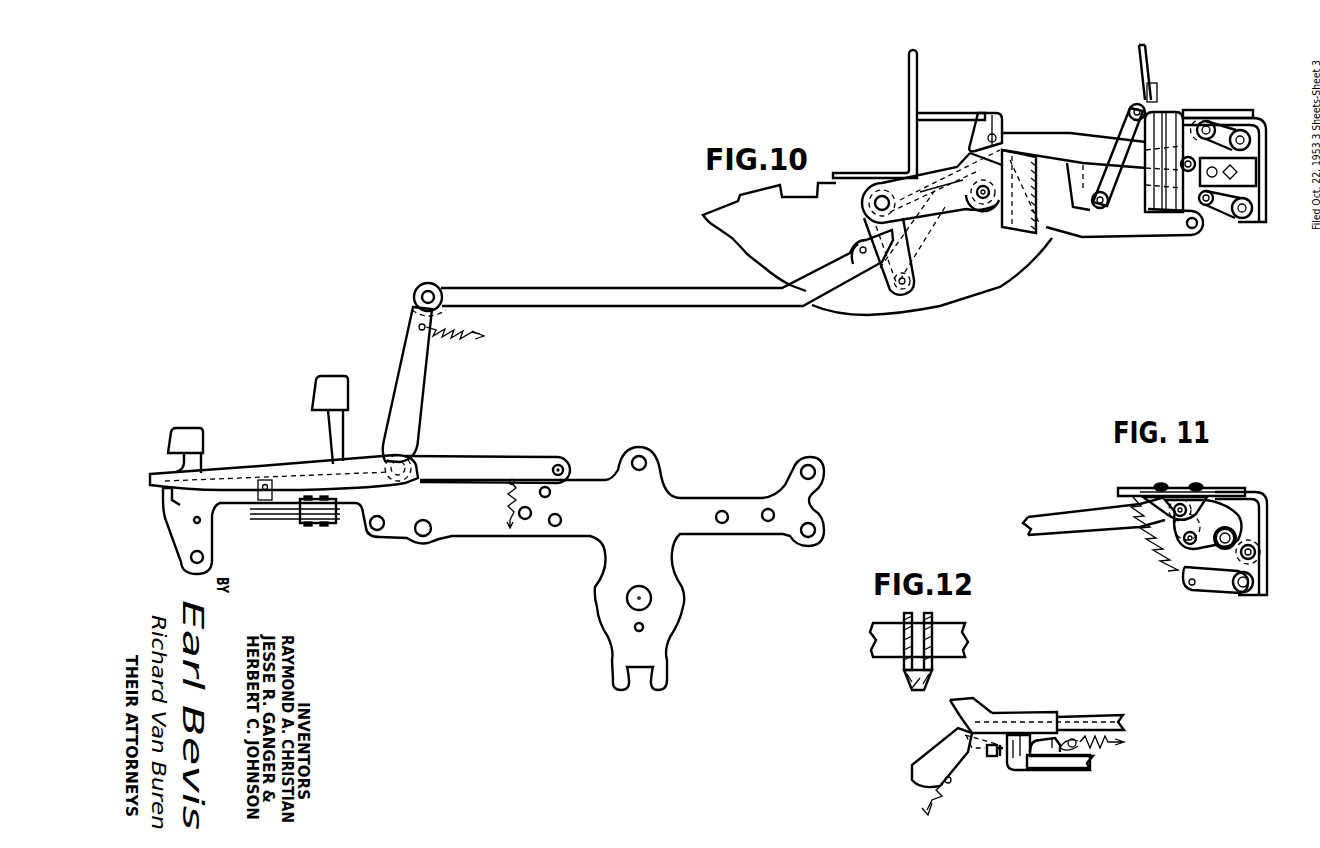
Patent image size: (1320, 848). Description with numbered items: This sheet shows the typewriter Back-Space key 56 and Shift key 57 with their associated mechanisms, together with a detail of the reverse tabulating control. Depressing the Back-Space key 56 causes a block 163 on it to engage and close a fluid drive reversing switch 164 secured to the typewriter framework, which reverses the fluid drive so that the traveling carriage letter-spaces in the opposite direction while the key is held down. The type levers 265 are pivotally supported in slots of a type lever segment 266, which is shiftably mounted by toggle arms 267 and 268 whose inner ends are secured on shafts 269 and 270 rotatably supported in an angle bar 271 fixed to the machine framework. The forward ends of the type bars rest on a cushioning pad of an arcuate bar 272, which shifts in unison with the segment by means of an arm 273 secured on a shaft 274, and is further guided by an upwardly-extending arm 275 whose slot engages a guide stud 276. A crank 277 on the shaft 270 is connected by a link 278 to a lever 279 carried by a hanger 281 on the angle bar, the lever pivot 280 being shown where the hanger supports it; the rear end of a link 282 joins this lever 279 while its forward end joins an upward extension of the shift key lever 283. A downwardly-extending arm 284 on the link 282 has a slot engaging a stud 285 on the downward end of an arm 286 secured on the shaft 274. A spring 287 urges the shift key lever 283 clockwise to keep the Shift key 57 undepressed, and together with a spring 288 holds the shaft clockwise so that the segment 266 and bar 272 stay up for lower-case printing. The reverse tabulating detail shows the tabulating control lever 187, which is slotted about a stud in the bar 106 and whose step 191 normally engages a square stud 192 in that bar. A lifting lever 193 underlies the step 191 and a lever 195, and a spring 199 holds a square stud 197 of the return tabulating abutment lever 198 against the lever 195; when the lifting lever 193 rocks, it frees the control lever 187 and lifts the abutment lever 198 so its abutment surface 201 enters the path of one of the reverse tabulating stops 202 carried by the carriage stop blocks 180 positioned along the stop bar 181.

In FIG. 10, the Back-Space key 56 is at (313, 389).
In FIG. 10, the Shift key 57 is at (203, 440).
In FIG. 10, the bar 106 is at (909, 74).
In FIG. 10, the block 163 is at (268, 480).
In FIG. 10, the fluid drive reversing switch 164 is at (268, 513).
In FIG. 12, the carriage stop blocks 180 is at (931, 621).
In FIG. 12, the stop bar 181 is at (960, 648).
In FIG. 12, the tabulating control lever 187 is at (958, 752).
In FIG. 12, the step 191 is at (1000, 758).
In FIG. 12, the square stud 192 is at (990, 758).
In FIG. 12, the lifting lever 193 is at (1042, 771).
In FIG. 12, the lever 195 is at (1077, 724).
In FIG. 12, the square stud 197 is at (1045, 766).
In FIG. 12, the return tabulating abutment lever 198 is at (966, 724).
In FIG. 12, the spring 199 is at (1108, 744).
In FIG. 12, the abutment surface 201 is at (952, 701).
In FIG. 12, the reverse tabulating stops 202 is at (908, 681).
In FIG. 10, the type levers 265 is at (1078, 230).
In FIG. 10, the type lever segment 266 is at (1168, 112).
In FIG. 10, the toggle arm 267 is at (1226, 130).
In FIG. 10, the toggle arm 268 is at (1222, 213).
In FIG. 10, the shaft 269 is at (1242, 129).
In FIG. 10, the shaft 270 is at (1244, 213).
In FIG. 11, the shaft 270 is at (1243, 593).
In FIG. 10, the angle bar 271 is at (1263, 177).
In FIG. 11, the angle bar 271 is at (1262, 531).
In FIG. 10, the arcuate bar 272 is at (1028, 223).
In FIG. 10, the arm 273 is at (952, 205).
In FIG. 10, the shaft 274 is at (866, 205).
In FIG. 10, the upwardly-extending arm 275 is at (980, 145).
In FIG. 10, the guide stud 276 is at (1003, 129).
In FIG. 11, the crank 277 is at (1245, 550).
In FIG. 11, the link 278 is at (1242, 540).
In FIG. 11, the lever 279 is at (1210, 510).
In FIG. 11, the pivot hub 280 is at (1180, 503).
In FIG. 11, the hanger 281 is at (1148, 490).
In FIG. 10, the link 282 is at (645, 293).
In FIG. 11, the link 282 is at (1063, 520).
In FIG. 10, the shift key lever 283 is at (418, 378).
In FIG. 10, the downwardly-extending arm 284 is at (856, 243).
In FIG. 10, the pivot 285 is at (906, 286).
In FIG. 10, the arm 286 is at (910, 232).
In FIG. 10, the spring 287 is at (482, 332).
In FIG. 11, the spring 288 is at (1166, 548).